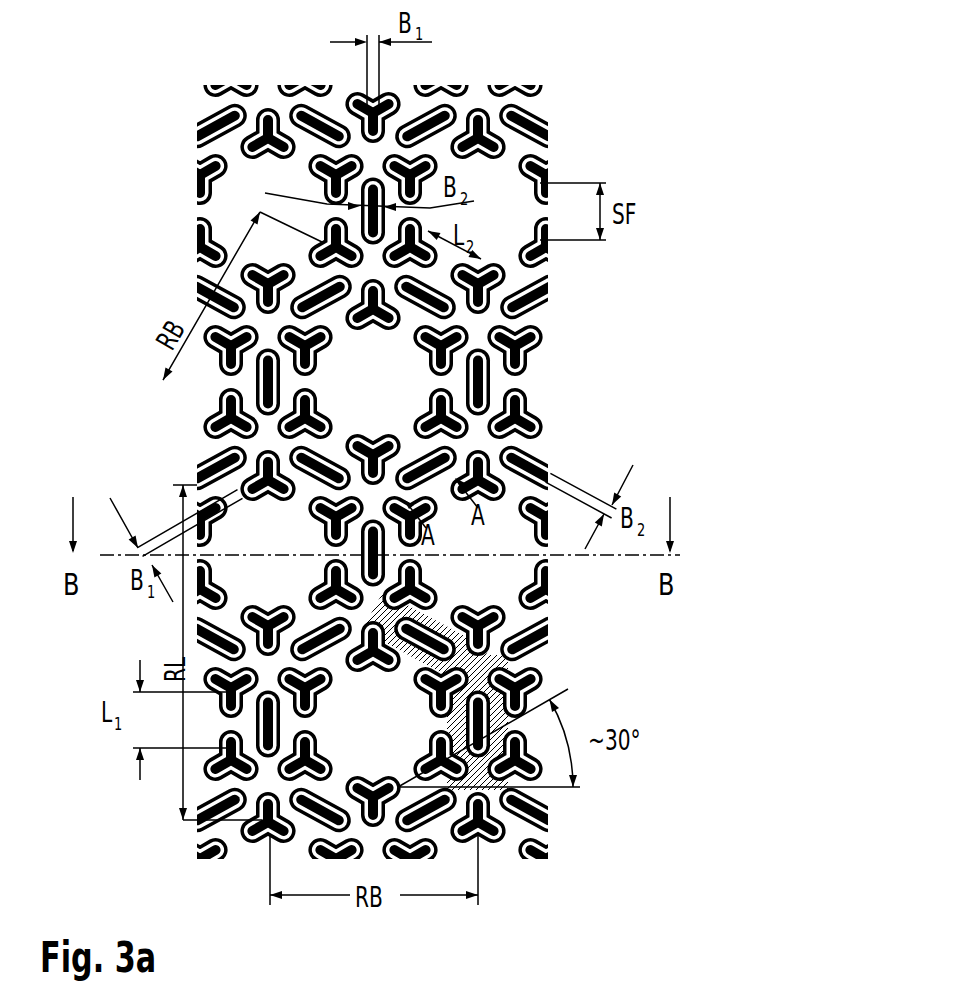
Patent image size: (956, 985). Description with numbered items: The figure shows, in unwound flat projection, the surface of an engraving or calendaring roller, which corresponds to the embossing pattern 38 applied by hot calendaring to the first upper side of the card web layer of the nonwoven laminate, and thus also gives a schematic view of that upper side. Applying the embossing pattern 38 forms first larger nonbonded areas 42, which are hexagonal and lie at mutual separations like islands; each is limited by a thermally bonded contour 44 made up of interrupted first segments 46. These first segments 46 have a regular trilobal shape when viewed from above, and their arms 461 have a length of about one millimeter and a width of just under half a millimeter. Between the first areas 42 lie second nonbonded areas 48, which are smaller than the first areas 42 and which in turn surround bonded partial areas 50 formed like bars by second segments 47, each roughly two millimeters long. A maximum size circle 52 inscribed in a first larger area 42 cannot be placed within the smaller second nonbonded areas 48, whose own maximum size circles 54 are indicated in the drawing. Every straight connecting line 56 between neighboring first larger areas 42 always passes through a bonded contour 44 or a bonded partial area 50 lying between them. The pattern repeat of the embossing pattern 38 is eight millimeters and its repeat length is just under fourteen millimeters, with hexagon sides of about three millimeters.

The embossing pattern 38 is at (535, 143).
The first larger nonbonded areas 42 is at (255, 533).
The thermally bonded contour 44 is at (420, 700).
The first segments 46 is at (383, 722).
The arms 461 is at (268, 832).
The second segments 47 is at (522, 607).
The second nonbonded areas 48 is at (548, 648).
The bonded partial areas 50 is at (537, 685).
The maximum size circle 52 is at (412, 322).
The maximum size circles 54 is at (241, 447).
The straight connecting line 56 is at (304, 193).